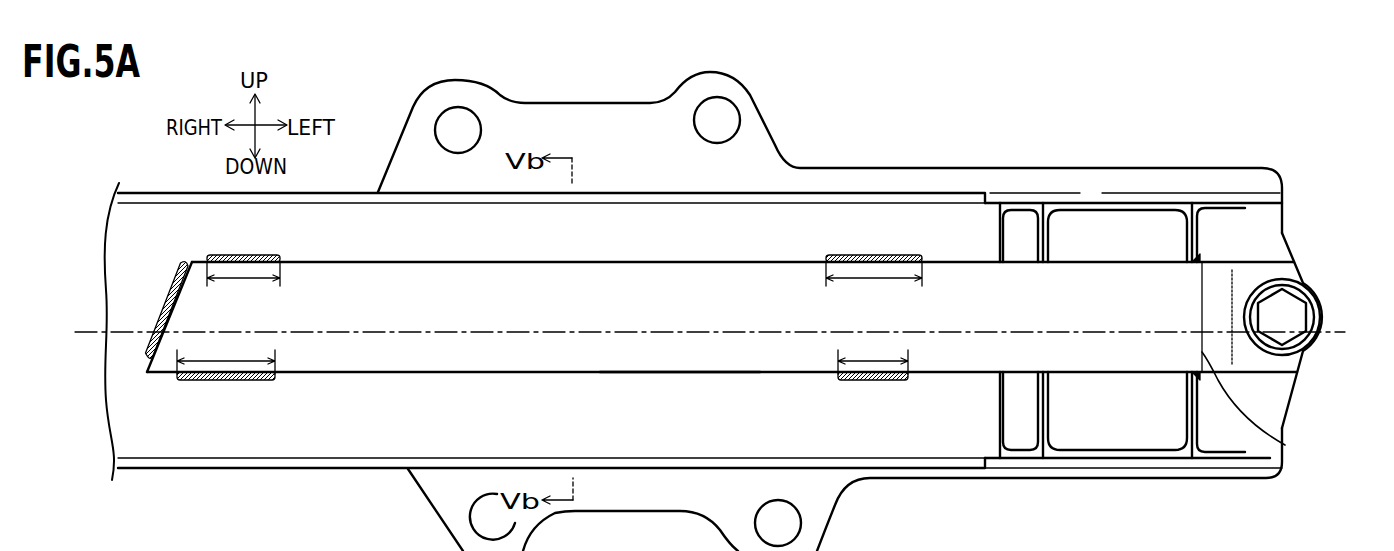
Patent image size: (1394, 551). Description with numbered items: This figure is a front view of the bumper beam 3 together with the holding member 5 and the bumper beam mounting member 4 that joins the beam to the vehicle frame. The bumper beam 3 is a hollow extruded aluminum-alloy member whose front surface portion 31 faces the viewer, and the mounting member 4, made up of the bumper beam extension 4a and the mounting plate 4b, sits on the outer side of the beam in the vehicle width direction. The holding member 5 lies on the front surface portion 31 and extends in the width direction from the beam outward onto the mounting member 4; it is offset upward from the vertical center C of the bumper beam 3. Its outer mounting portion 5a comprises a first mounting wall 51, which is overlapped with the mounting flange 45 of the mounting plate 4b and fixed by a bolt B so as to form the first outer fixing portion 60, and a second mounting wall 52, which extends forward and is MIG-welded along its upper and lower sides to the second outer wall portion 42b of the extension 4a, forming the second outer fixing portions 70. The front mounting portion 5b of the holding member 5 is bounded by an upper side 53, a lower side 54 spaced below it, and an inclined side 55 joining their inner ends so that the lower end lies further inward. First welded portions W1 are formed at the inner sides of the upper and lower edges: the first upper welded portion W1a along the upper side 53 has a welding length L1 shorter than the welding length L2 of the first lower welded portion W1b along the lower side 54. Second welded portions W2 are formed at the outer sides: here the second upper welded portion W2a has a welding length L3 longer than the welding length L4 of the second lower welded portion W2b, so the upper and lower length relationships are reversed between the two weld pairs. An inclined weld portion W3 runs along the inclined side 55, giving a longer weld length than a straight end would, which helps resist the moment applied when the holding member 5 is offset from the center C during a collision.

The bumper beam 3 is at (545, 364).
The front surface portion 31 is at (358, 433).
The bumper beam mounting member 4 is at (872, 306).
The bumper beam extension 4a is at (1091, 186).
The mounting plate 4b is at (1156, 158).
The second outer wall portion 42b is at (1197, 232).
The mounting flange 45 is at (1268, 246).
The holding member 5 is at (763, 345).
The outer mounting portion 5a is at (1298, 351).
The front mounting portion 5b is at (725, 381).
The first mounting wall 51 is at (1303, 349).
The second mounting wall 52 is at (1285, 445).
The upper side 53 is at (594, 262).
The lower side 54 is at (593, 373).
The inclined side 55 is at (147, 374).
The first outer fixing portion 60 is at (1284, 315).
The bolt B is at (1319, 317).
The second outer fixing portion 70 is at (1198, 262).
The first welded portion W1 is at (260, 320).
The first upper welded portion W1a is at (244, 255).
The first lower welded portion W1b is at (222, 382).
The second welded portion W2 is at (898, 320).
The second upper welded portion W2a is at (870, 255).
The second lower welded portion W2b is at (872, 381).
The inclined weld portion W3 is at (171, 283).
The welding length of first upper welded portion L1 is at (243, 286).
The welding length of first lower welded portion L2 is at (226, 353).
The welding length of second upper welded portion L3 is at (874, 286).
The welding length of second lower welded portion L4 is at (873, 353).
The vertical center C is at (528, 330).